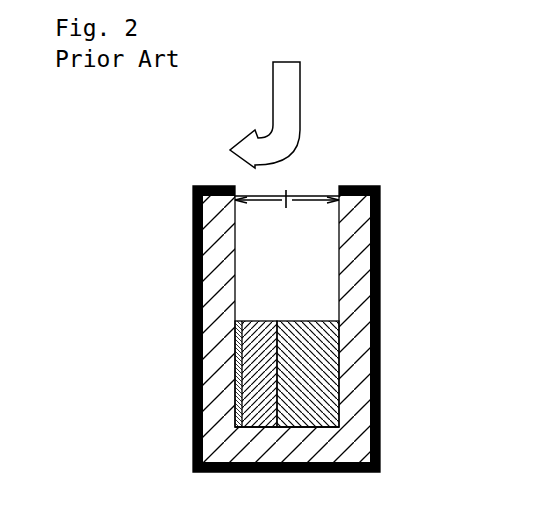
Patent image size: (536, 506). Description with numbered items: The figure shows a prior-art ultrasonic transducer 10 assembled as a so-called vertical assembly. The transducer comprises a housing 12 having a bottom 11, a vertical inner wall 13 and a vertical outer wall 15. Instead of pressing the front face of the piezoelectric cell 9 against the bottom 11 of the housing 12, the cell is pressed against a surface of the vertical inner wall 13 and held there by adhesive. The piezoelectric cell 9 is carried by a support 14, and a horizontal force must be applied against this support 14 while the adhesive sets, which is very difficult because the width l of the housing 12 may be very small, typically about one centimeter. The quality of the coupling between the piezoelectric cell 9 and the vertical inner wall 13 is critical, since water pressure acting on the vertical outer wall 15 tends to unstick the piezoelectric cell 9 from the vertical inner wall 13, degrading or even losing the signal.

The ultrasonic transducer 10 is at (147, 205).
The vertical outer wall 15 is at (193, 304).
The housing 12 is at (328, 224).
The vertical inner wall 13 is at (235, 249).
The piezoelectric cell 9 is at (260, 330).
The support 14 is at (318, 327).
The bottom 11 is at (304, 425).